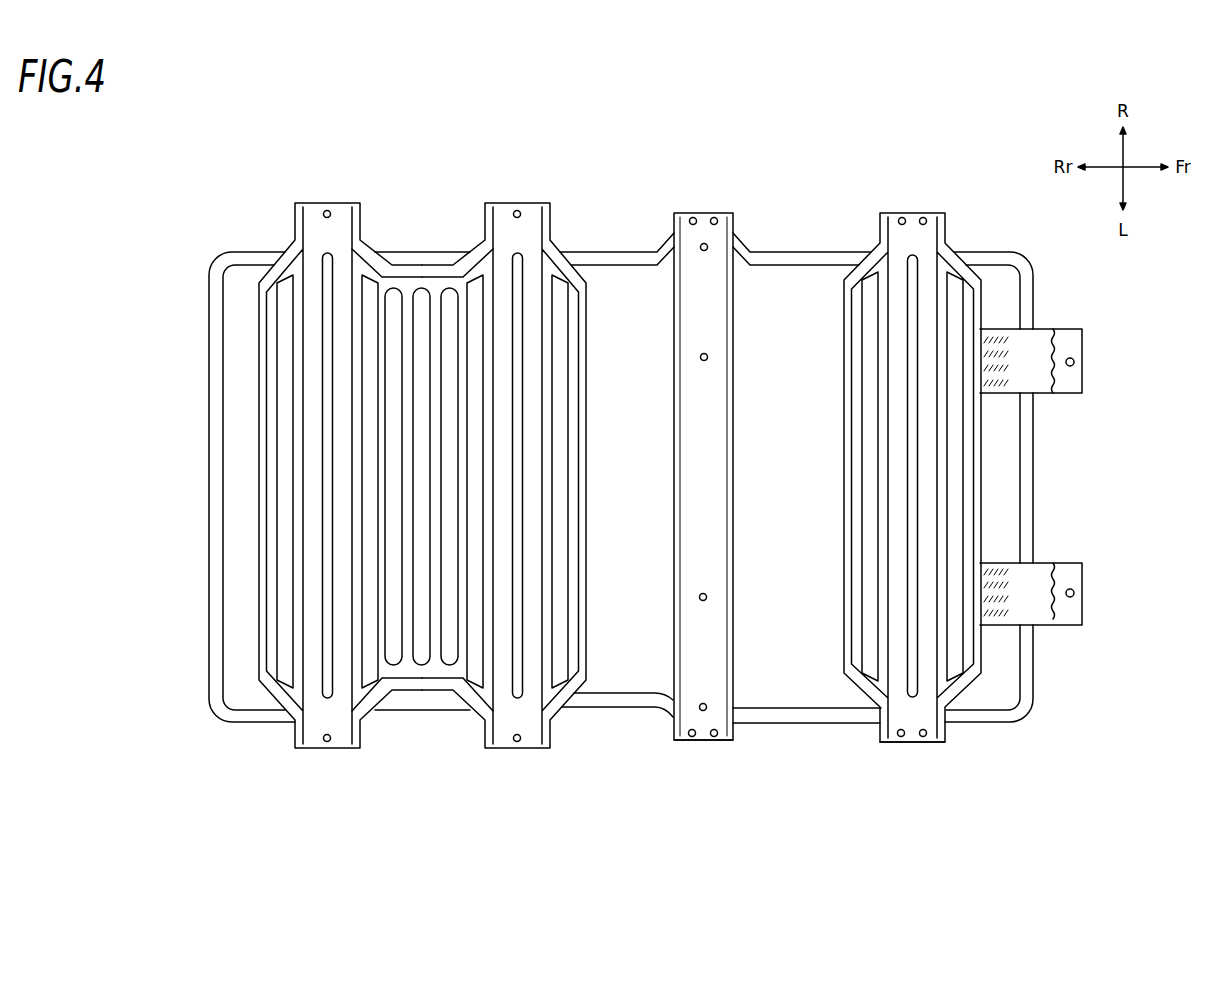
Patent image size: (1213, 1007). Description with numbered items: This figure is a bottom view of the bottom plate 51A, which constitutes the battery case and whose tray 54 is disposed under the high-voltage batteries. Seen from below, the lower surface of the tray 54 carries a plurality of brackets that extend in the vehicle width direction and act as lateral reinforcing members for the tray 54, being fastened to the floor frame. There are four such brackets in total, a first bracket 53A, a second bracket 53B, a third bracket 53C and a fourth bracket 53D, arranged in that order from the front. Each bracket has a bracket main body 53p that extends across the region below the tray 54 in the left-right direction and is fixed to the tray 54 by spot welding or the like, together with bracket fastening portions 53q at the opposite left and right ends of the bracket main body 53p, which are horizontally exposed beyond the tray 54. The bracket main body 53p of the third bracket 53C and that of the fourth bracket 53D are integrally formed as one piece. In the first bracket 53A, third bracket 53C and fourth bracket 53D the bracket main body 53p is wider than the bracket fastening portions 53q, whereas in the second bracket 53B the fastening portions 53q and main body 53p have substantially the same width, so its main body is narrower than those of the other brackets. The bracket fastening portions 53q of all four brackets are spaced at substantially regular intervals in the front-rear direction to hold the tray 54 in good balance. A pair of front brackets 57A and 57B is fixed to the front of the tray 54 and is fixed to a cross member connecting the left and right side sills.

The bottom plate 51A is at (232, 178).
The first bracket 53A is at (912, 213).
The second bracket 53B is at (704, 213).
The third bracket 53C is at (525, 203).
The fourth bracket 53D is at (335, 203).
The bracket main body 53p is at (870, 623).
The bracket fastening portion 53q is at (700, 742).
The tray 54 is at (618, 673).
The front bracket 57A is at (1078, 604).
The front bracket 57B is at (1078, 373).